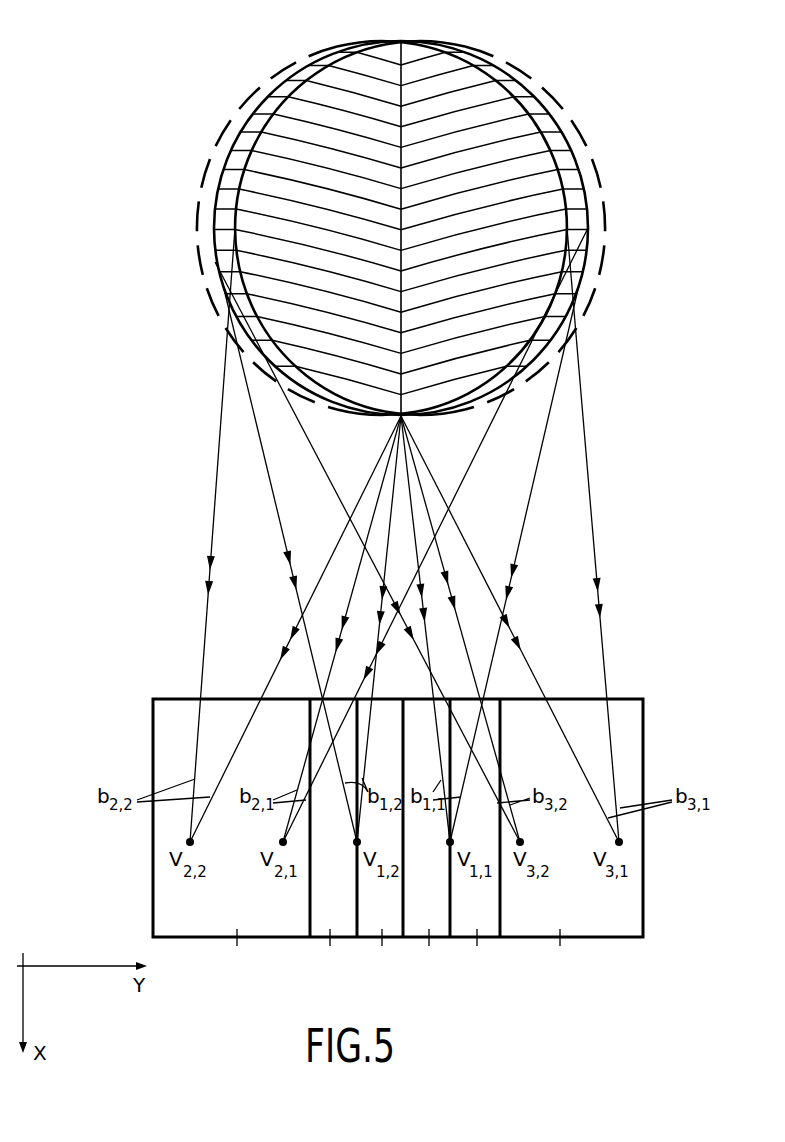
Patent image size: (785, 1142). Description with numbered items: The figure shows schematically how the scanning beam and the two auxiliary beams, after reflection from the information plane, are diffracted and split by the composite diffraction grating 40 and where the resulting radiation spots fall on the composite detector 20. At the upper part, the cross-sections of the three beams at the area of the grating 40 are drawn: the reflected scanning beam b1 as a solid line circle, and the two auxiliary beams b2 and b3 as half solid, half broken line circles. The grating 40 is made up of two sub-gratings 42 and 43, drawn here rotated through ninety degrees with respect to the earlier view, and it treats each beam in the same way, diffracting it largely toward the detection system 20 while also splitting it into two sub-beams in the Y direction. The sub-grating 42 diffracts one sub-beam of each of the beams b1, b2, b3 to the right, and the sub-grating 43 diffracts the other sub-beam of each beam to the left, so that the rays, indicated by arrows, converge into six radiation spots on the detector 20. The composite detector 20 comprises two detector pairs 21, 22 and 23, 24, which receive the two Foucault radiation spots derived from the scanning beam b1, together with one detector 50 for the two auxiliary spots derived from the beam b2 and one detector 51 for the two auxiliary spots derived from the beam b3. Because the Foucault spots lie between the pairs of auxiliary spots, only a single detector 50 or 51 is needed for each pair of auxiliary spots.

The composite diffraction grating 40 is at (513, 54).
The sub-grating 42 is at (453, 80).
The sub-grating 43 is at (346, 60).
The composite detector 20 is at (652, 707).
The detector 21 is at (472, 836).
The detector 22 is at (424, 836).
The detector 23 is at (377, 836).
The detector 24 is at (328, 836).
The detector 50 is at (237, 951).
The detector 51 is at (538, 836).
The scanning beam b1 is at (619, 172).
The auxiliary beam b2 is at (601, 137).
The auxiliary beam b3 is at (580, 108).